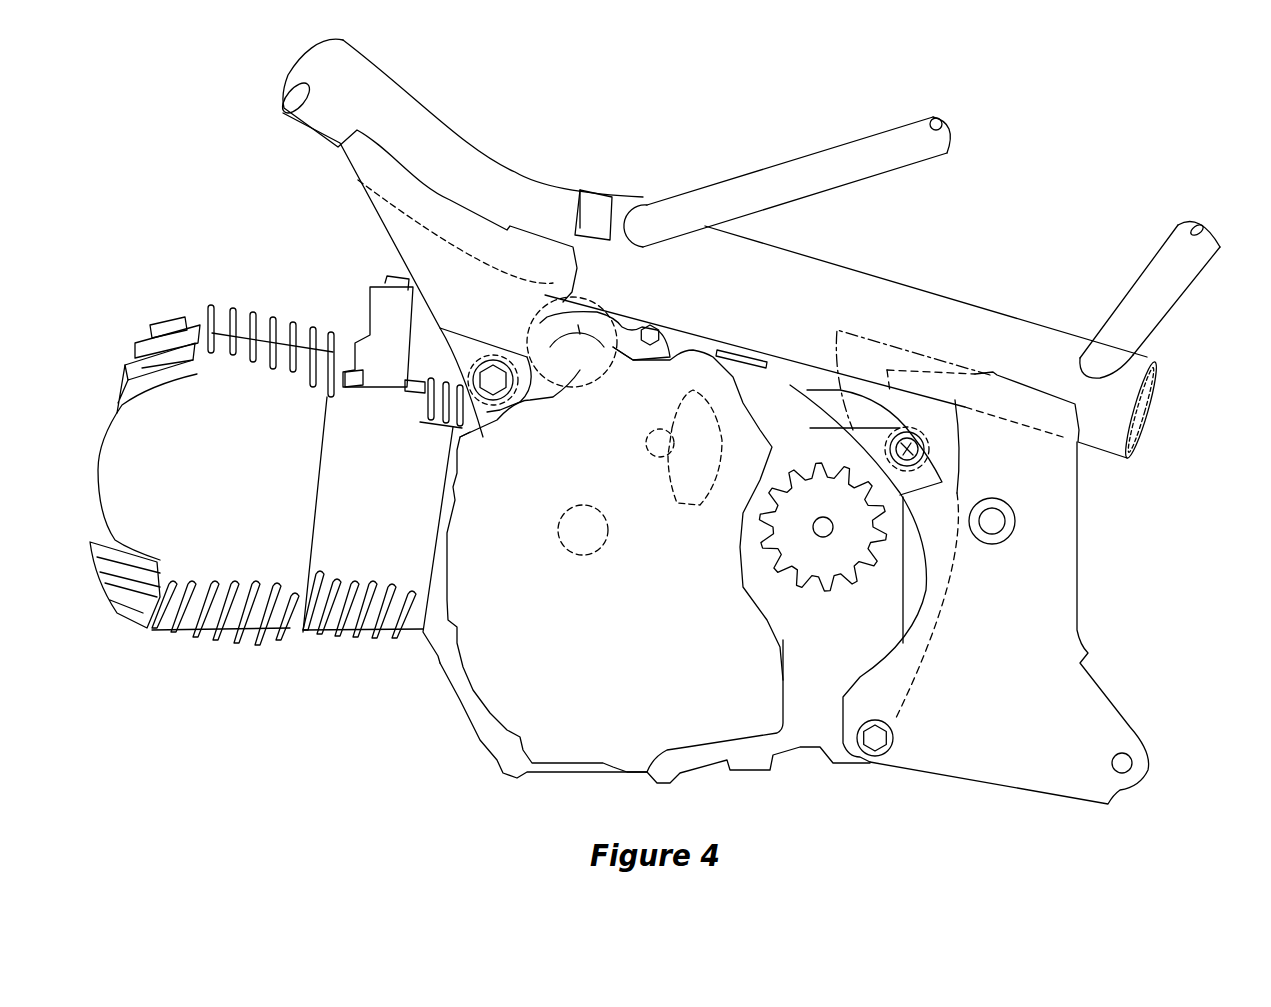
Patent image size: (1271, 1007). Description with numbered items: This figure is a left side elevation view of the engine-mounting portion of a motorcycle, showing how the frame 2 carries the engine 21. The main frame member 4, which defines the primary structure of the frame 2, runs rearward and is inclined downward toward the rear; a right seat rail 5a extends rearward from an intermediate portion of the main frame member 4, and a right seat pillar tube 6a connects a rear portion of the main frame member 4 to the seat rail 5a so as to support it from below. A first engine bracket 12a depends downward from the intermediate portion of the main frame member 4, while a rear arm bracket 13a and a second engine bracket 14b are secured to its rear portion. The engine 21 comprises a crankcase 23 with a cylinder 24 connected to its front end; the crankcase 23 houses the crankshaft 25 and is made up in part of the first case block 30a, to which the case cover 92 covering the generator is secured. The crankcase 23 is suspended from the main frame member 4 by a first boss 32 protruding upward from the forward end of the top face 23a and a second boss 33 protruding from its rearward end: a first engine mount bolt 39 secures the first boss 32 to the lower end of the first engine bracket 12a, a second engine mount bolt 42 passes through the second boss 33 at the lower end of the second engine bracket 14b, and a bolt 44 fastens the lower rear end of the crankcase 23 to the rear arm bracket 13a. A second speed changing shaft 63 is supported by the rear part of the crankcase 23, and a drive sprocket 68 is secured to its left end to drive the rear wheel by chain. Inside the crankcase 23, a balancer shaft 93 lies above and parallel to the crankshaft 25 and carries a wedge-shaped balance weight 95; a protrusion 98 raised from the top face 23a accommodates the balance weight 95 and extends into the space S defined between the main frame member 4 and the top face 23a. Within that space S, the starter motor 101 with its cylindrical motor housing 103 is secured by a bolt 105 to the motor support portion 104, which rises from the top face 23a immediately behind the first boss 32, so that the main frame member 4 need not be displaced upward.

The frame 2 is at (388, 72).
The main frame member 4 is at (563, 197).
The right seat rail 5a is at (817, 157).
The right seat pillar tube 6a is at (1173, 290).
The first engine bracket 12a is at (415, 252).
The rear arm bracket 13a is at (1065, 543).
The second engine bracket 14b is at (943, 417).
The engine 21 is at (433, 672).
The crankcase 23 is at (478, 723).
The top face of the crankcase 23a is at (517, 403).
The cylinder 24 is at (305, 637).
The crankshaft 25 is at (572, 540).
The first case block 30a is at (797, 648).
The first boss 32 is at (478, 410).
The second boss 33 is at (867, 435).
The first engine mount bolt 39 is at (490, 372).
The second engine mount bolt 42 is at (907, 450).
The bolt 44 is at (871, 745).
The second speed changing shaft 63 is at (823, 530).
The drive sprocket 68 is at (847, 553).
The case cover 92 is at (603, 717).
The balancer shaft 93 is at (652, 450).
The balance weight 95 is at (703, 488).
The protrusion 98 is at (670, 357).
The starter motor 101 is at (560, 302).
The motor housing 103 is at (595, 312).
The motor support portion 104 is at (580, 335).
The bolt 105 is at (657, 333).
The space S is at (630, 312).